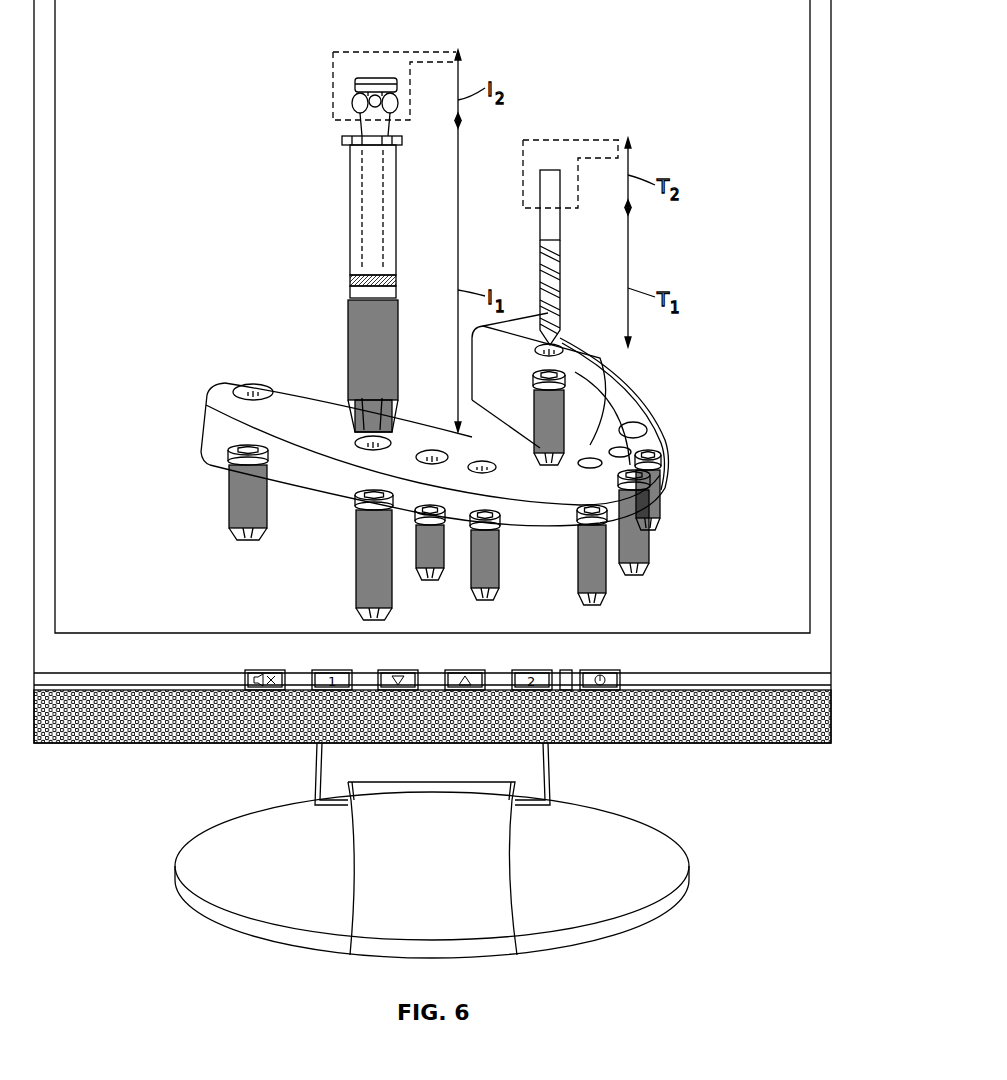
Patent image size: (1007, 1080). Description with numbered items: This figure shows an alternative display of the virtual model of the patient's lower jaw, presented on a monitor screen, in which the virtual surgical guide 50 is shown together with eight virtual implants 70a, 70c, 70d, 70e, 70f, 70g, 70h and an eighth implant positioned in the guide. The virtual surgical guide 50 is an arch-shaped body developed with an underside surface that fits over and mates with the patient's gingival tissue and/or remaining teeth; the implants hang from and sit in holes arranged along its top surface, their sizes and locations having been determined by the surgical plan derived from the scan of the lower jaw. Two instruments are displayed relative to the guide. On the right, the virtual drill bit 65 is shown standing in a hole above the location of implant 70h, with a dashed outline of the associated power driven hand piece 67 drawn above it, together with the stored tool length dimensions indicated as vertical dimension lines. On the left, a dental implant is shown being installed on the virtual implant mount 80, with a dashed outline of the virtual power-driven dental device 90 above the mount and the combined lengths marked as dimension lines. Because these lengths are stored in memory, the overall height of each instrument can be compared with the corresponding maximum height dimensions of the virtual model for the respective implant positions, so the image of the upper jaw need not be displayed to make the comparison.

The virtual surgical guide 50 is at (295, 400).
The virtual drill bit 65 is at (563, 304).
The power driven hand piece 67 is at (573, 136).
The virtual implant 70a is at (226, 503).
The virtual implant 70c is at (447, 552).
The virtual implant 70d is at (501, 567).
The virtual implant 70e is at (576, 545).
The virtual implant 70f is at (652, 540).
The virtual implant 70g is at (663, 498).
The virtual implant 70h is at (533, 444).
The virtual implant mount 80 is at (349, 212).
The virtual power-driven dental device 90 is at (333, 60).